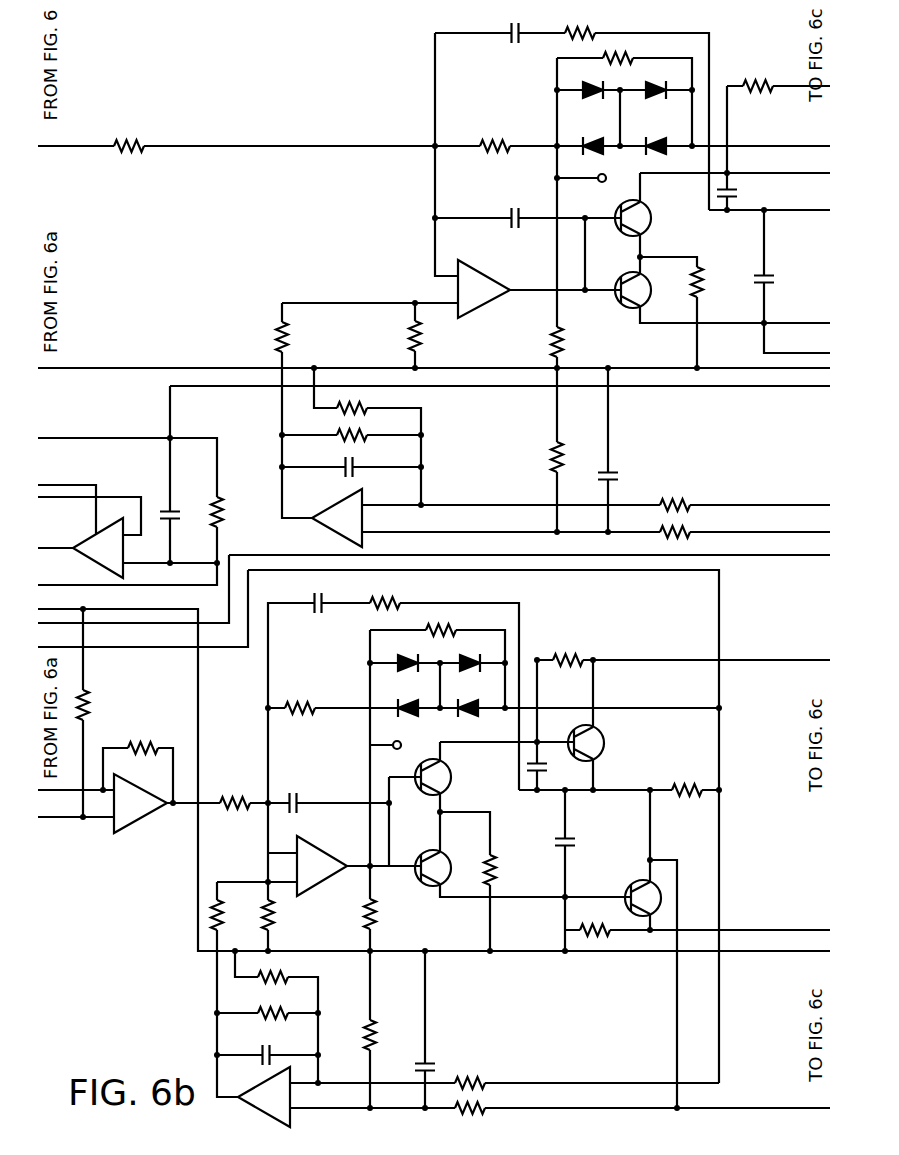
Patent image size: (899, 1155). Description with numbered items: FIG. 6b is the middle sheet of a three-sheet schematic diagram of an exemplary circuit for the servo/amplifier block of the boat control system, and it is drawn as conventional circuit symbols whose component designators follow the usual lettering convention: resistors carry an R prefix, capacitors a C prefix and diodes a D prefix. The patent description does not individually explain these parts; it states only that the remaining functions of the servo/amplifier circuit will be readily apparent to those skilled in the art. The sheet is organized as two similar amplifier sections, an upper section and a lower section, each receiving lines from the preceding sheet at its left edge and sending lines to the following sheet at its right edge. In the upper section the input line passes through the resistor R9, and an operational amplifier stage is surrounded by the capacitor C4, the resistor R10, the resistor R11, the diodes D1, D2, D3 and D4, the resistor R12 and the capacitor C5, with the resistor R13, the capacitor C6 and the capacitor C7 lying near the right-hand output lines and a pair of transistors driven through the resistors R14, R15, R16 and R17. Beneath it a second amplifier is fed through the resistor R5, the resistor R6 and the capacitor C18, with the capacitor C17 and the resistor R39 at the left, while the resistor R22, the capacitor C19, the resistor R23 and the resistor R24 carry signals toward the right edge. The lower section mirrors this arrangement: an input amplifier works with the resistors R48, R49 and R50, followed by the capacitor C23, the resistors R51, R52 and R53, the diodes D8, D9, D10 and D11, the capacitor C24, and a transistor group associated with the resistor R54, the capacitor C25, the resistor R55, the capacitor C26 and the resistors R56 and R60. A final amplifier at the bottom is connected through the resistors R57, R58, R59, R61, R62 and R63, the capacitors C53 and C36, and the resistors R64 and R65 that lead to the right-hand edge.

The resistor R9 is at (134, 158).
The capacitor C4 is at (498, 27).
The resistor R10 is at (595, 22).
The resistor R11 is at (636, 51).
The diode D1 is at (582, 81).
The diode D2 is at (662, 81).
The diode D3 is at (587, 134).
The diode D4 is at (662, 136).
The resistor R12 is at (506, 134).
The resistor R13 is at (763, 73).
The capacitor C5 is at (503, 207).
The capacitor C6 is at (744, 196).
The capacitor C7 is at (778, 267).
The resistor R14 is at (303, 337).
The resistor R15 is at (436, 336).
The resistor R16 is at (579, 342).
The resistor R17 is at (715, 290).
The resistor R5 is at (366, 401).
The resistor R6 is at (366, 444).
The capacitor C18 is at (329, 473).
The capacitor C17 is at (183, 503).
The resistor R39 is at (238, 512).
The resistor R22 is at (540, 451).
The capacitor C19 is at (625, 462).
The resistor R23 is at (686, 491).
The resistor R24 is at (693, 541).
The resistor R48 is at (104, 698).
The resistor R49 is at (154, 734).
The resistor R50 is at (233, 795).
The capacitor C23 is at (317, 617).
The resistor R51 is at (406, 595).
The resistor R52 is at (458, 623).
The diode D8 is at (396, 654).
The diode D9 is at (477, 654).
The diode D10 is at (404, 698).
The diode D11 is at (480, 698).
The resistor R53 is at (315, 722).
The capacitor C24 is at (315, 797).
The resistor R54 is at (573, 646).
The capacitor C25 is at (512, 769).
The resistor R55 is at (682, 779).
The capacitor C26 is at (581, 830).
The resistor R56 is at (509, 871).
The resistor R57 is at (235, 908).
The resistor R58 is at (286, 915).
The resistor R59 is at (390, 915).
The resistor R60 is at (592, 920).
The resistor R61 is at (290, 971).
The resistor R62 is at (256, 1003).
The capacitor C53 is at (246, 1046).
The resistor R63 is at (389, 1023).
The capacitor C36 is at (439, 1057).
The resistor R64 is at (483, 1072).
The resistor R65 is at (490, 1119).